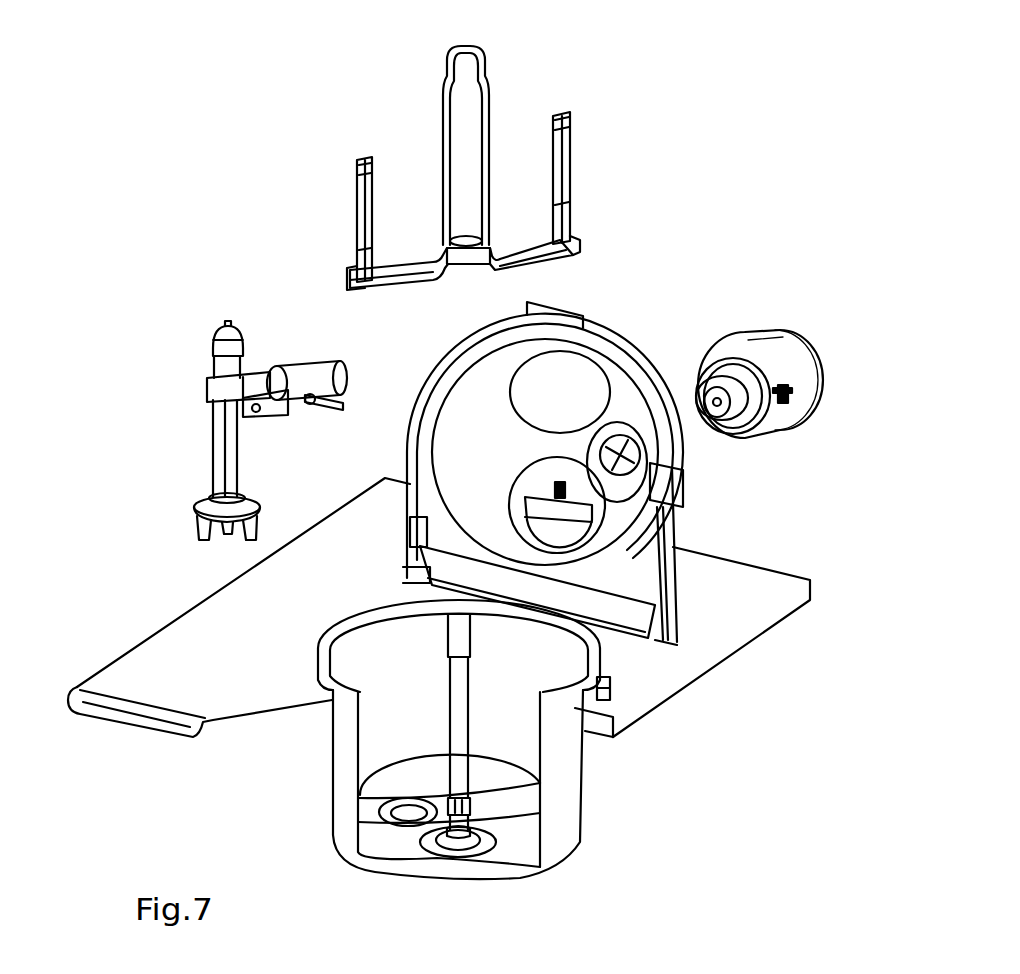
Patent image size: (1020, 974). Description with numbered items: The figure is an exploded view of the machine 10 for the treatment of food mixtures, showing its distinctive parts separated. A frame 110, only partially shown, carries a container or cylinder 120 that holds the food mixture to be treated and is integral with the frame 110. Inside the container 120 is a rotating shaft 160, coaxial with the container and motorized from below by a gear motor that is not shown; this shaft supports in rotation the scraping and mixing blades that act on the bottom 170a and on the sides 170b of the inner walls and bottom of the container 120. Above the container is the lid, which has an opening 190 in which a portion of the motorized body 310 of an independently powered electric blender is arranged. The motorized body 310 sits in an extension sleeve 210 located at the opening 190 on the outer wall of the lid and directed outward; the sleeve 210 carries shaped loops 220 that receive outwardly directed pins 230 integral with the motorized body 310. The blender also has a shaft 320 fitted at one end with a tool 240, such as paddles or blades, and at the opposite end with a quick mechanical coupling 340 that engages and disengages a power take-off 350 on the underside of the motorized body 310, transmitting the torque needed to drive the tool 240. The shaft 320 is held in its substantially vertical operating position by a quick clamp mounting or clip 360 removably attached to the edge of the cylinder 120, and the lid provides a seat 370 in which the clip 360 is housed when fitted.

The machine 10 is at (420, 709).
The frame 110 is at (148, 683).
The container or cylinder 120 is at (562, 832).
The rotating shaft 160 is at (432, 803).
The bottom scraping and mixing blades 170a is at (521, 240).
The side scraping and mixing blades 170b is at (370, 157).
The opening 190 is at (590, 426).
The extension sleeve 210 is at (682, 415).
The shaped loops 220 is at (681, 429).
The pins 230 is at (790, 396).
The tool 240 is at (191, 523).
The motorized body 310 is at (797, 360).
The shaft 320 is at (212, 433).
The quick mechanical coupling 340 is at (227, 323).
The power take-off 350 is at (765, 336).
The quick clamp mounting (clip) 360 is at (252, 375).
The seat 370 is at (672, 507).